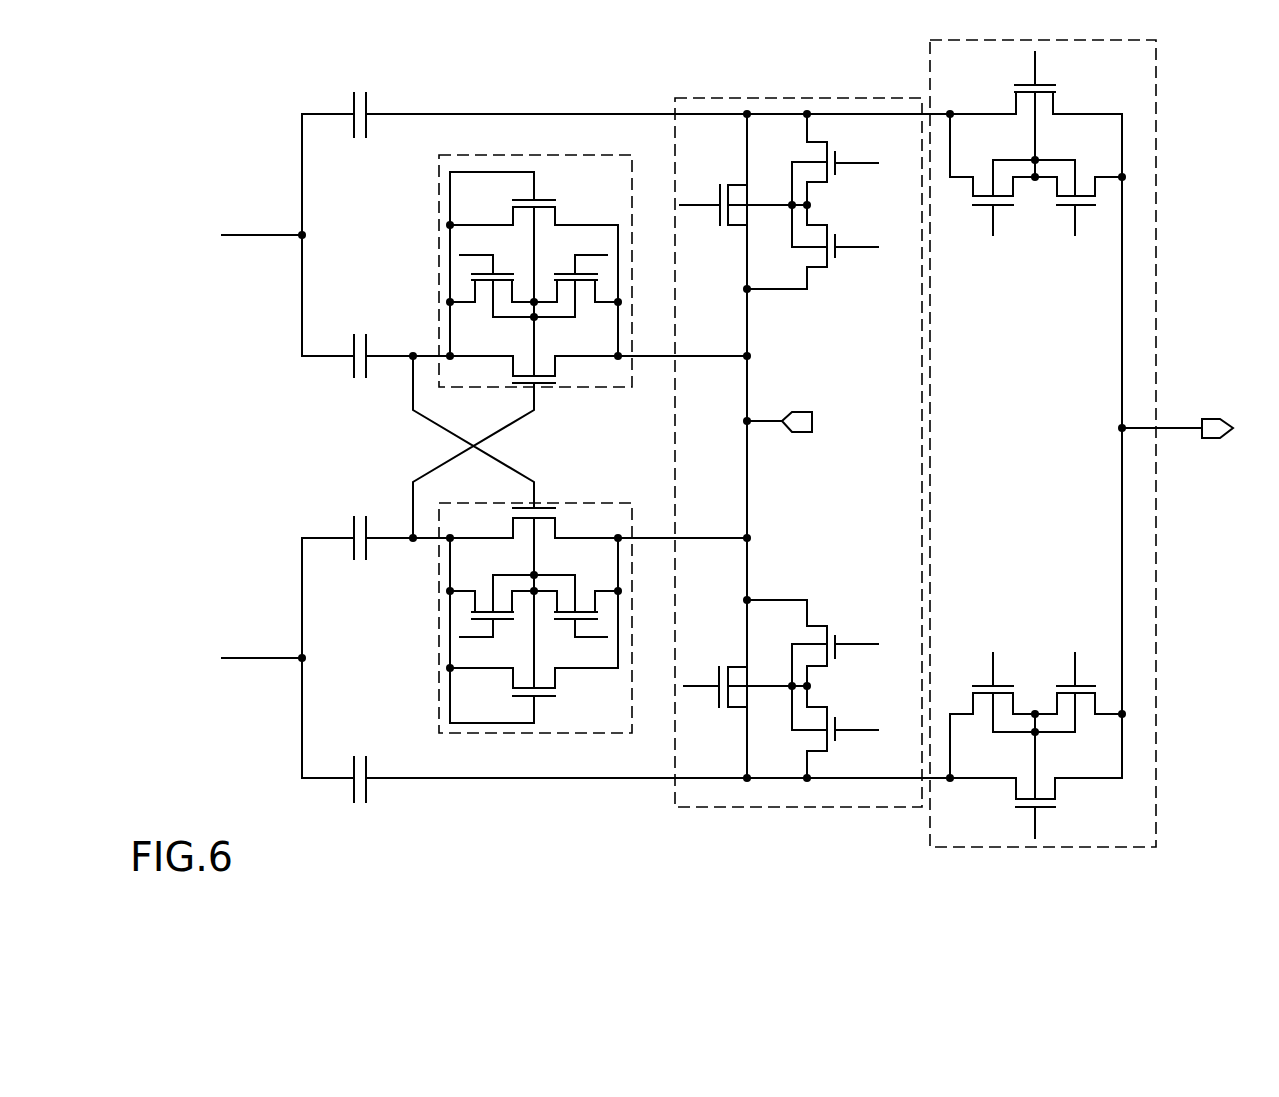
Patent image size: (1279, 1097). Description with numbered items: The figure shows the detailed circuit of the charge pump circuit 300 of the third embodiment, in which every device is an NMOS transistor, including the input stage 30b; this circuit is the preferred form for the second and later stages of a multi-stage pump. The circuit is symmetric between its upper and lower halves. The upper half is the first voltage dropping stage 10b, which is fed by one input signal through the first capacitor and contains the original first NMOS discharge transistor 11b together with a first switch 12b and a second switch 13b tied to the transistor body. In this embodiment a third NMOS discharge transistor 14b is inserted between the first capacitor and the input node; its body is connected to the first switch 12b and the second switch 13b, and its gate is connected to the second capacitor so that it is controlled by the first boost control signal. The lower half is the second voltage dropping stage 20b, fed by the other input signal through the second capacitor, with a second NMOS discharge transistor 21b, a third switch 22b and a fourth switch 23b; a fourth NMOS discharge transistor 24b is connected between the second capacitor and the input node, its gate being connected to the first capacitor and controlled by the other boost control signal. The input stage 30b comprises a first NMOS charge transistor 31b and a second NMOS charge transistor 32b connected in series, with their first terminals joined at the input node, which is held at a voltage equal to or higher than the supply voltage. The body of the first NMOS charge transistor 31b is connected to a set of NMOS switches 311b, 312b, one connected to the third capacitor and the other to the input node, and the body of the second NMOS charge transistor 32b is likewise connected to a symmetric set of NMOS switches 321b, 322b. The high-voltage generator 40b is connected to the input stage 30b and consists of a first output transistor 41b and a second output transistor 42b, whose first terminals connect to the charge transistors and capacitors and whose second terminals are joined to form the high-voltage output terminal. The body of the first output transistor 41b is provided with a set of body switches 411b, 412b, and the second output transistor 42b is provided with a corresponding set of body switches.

The charge pump circuit 300 is at (250, 108).
The first voltage dropping stage 10b is at (590, 155).
The first NMOS discharge transistor 11b is at (547, 199).
The first switch 12b is at (485, 284).
The second switch 13b is at (585, 284).
The third NMOS discharge transistor 14b is at (555, 370).
The second voltage dropping stage 20b is at (444, 735).
The second NMOS discharge transistor 21b is at (545, 703).
The third switch 22b is at (490, 597).
The fourth switch 23b is at (580, 595).
The fourth NMOS discharge transistor 24b is at (548, 507).
The input stage 30b is at (810, 98).
The first NMOS charge transistor 31b is at (720, 185).
The NMOS switch 311b is at (837, 175).
The NMOS switch 312b is at (837, 260).
The second NMOS charge transistor 32b is at (719, 705).
The NMOS switch 321b is at (837, 750).
The NMOS switch 322b is at (836, 626).
The high-voltage generator 40b is at (1156, 48).
The first output transistor 41b is at (1048, 81).
The body switch 411b is at (968, 207).
The body switch 412b is at (1097, 208).
The second output transistor 42b is at (1047, 810).